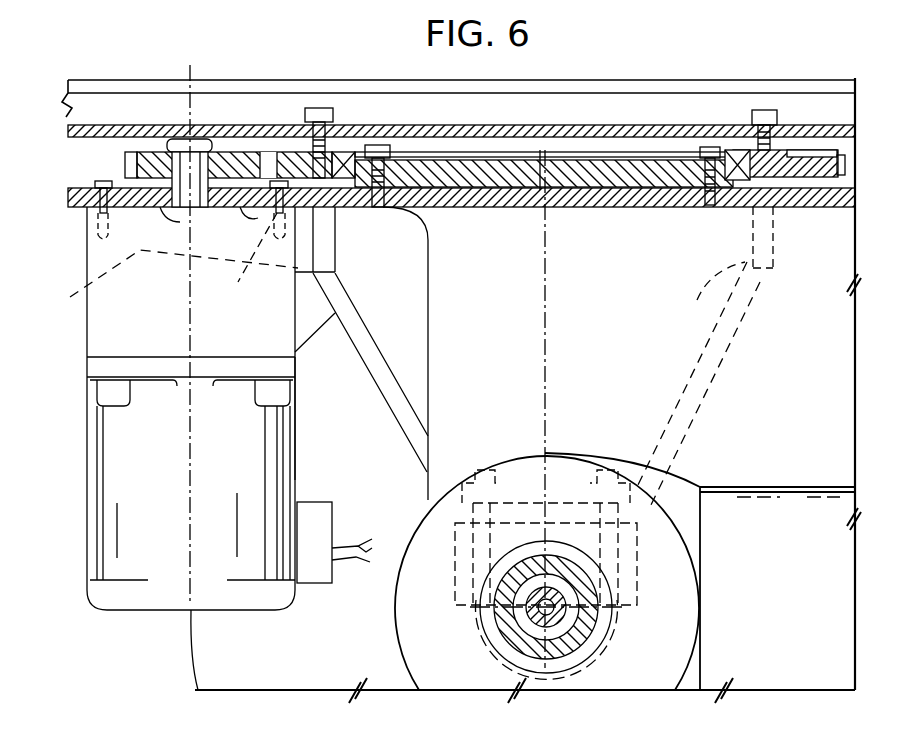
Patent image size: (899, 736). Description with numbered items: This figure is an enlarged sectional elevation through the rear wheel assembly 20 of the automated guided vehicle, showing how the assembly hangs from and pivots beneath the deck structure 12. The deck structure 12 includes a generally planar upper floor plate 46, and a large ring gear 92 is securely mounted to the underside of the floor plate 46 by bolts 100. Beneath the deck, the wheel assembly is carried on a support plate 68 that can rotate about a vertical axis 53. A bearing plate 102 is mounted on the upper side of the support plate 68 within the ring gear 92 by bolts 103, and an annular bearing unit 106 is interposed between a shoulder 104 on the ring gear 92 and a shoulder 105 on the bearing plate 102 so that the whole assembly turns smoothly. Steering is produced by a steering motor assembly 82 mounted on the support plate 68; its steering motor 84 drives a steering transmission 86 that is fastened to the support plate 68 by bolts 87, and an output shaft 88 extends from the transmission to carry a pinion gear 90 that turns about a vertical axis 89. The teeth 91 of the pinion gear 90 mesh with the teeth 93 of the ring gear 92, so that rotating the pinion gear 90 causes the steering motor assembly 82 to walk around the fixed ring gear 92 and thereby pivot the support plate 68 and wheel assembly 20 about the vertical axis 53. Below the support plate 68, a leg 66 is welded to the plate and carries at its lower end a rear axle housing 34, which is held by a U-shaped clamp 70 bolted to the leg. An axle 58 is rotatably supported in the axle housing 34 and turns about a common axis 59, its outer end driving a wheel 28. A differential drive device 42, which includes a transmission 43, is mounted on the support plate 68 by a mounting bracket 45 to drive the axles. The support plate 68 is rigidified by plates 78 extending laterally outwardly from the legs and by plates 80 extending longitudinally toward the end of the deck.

The deck structure 12 is at (659, 76).
The rear wheel assembly 20 is at (170, 653).
The wheel 28 is at (282, 673).
The rear axle housing 34 is at (505, 627).
The differential drive device 42 is at (813, 462).
The transmission 43 is at (760, 500).
The mounting bracket 45 is at (440, 292).
The upper floor plate 46 is at (108, 125).
The vertical axis 53 is at (543, 242).
The axle 58 is at (498, 455).
The common axis 59 is at (555, 615).
The leg 66 is at (762, 303).
The support plate 68 is at (585, 208).
The U-shaped clamp 70 is at (600, 547).
The plate 78 is at (333, 245).
The plate 80 is at (163, 283).
The steering motor assembly 82 is at (76, 468).
The steering motor 84 is at (280, 452).
The steering transmission 86 is at (122, 328).
The bolt 87 is at (98, 182).
The output shaft 88 is at (172, 207).
The vertical axis 89 is at (188, 108).
The pinion gear 90 is at (229, 146).
The teeth 91 is at (125, 160).
The ring gear 92 is at (277, 146).
The teeth 93 is at (842, 165).
The bolt 100 is at (328, 118).
The bearing plate 102 is at (653, 208).
The bolt 103 is at (695, 147).
The shoulder 104 is at (766, 182).
The shoulder 105 is at (738, 195).
The annular bearing unit 106 is at (737, 150).